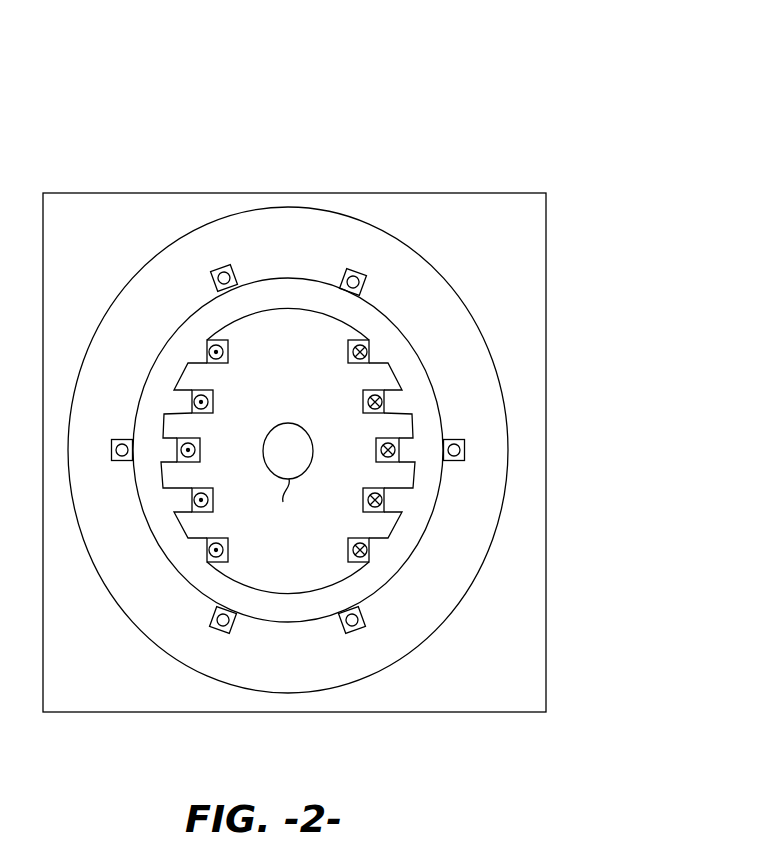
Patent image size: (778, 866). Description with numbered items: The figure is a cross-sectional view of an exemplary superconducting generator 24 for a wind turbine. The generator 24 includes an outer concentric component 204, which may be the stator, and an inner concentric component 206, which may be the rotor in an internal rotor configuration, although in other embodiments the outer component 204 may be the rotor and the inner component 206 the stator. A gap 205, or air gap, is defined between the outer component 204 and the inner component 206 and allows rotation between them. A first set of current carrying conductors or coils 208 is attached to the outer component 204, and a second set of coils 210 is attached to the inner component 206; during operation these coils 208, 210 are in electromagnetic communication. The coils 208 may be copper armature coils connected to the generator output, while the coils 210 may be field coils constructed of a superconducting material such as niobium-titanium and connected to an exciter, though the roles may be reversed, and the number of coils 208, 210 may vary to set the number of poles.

The superconducting generator 24 is at (353, 90).
The outer concentric component 204 is at (330, 235).
The gap 205 is at (297, 293).
The inner concentric component 206 is at (280, 310).
The first set of current carrying conductors 208 is at (222, 268).
The second set of current carrying conductors 210 is at (185, 448).